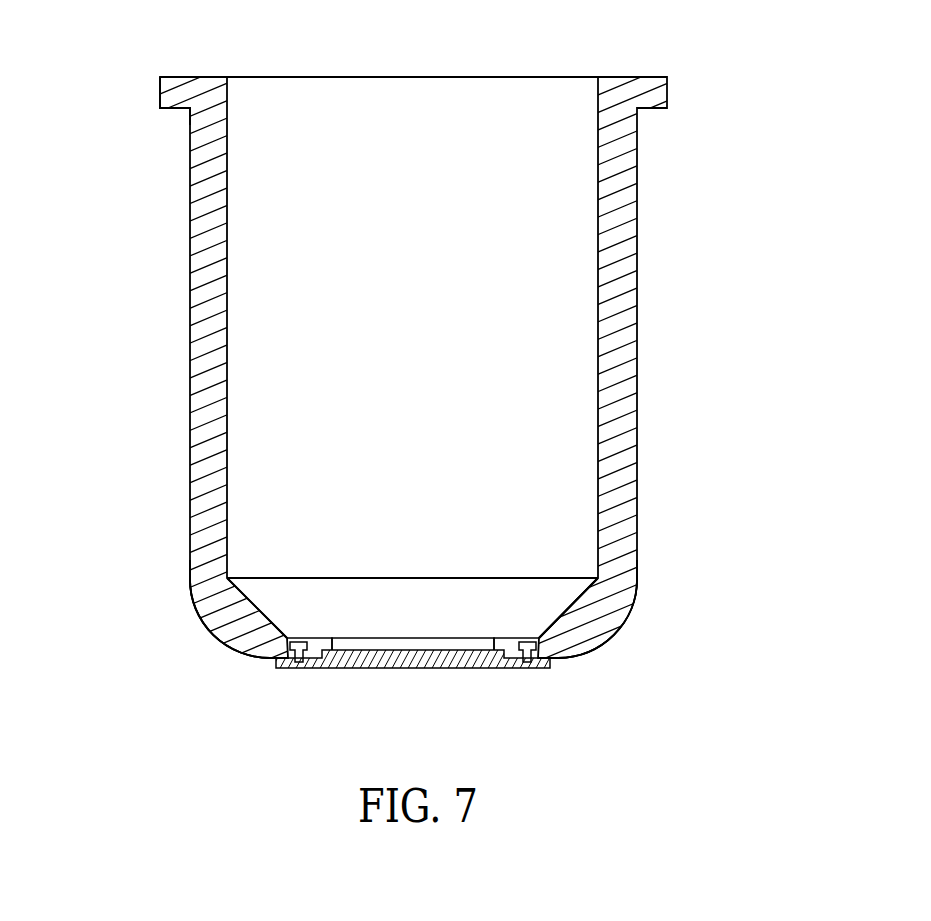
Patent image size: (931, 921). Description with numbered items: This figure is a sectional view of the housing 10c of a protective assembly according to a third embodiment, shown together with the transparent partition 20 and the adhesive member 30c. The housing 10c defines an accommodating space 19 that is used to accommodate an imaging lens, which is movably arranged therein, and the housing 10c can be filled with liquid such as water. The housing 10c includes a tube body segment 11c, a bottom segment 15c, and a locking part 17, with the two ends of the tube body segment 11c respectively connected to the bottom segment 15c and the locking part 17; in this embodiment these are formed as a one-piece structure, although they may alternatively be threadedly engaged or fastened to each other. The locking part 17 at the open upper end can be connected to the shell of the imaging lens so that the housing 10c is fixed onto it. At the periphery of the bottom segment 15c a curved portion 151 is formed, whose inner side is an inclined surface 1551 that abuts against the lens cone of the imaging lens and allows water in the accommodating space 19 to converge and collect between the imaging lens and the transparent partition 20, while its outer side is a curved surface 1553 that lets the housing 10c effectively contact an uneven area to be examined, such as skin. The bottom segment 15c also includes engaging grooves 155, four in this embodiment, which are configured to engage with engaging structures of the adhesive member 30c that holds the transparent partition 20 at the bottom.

The housing 10c is at (434, 375).
The tube body segment 11c is at (627, 310).
The bottom segment 15c is at (598, 647).
The curved portion 151 is at (627, 620).
The inclined surface 1551 is at (563, 596).
The curved surface 1553 is at (208, 640).
The engaging groove 155 is at (296, 632).
The locking part 17 is at (165, 99).
The accommodating space 19 is at (553, 112).
The transparent partition 20 is at (410, 670).
The adhesive member 30c is at (300, 670).